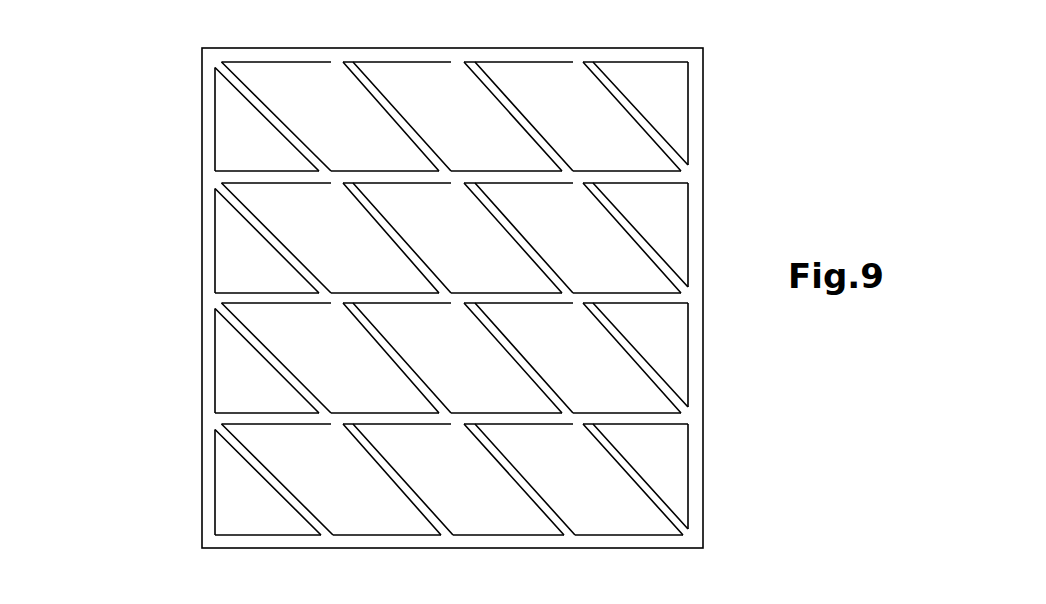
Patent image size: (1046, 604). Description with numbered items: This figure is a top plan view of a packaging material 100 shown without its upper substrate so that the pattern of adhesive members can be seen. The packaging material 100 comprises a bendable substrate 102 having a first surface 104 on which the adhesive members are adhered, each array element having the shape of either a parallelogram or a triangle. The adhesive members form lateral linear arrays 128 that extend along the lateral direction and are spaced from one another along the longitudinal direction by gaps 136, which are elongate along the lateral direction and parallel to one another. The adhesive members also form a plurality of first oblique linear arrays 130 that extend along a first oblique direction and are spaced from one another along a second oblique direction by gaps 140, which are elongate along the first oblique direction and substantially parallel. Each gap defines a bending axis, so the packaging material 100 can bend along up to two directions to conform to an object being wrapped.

The packaging material 100 is at (158, 70).
The bendable substrate 102 is at (697, 90).
The first surface 104 is at (694, 127).
The lateral linear arrays 128 is at (196, 115).
The gaps 136 is at (209, 177).
The first oblique linear arrays 130 is at (710, 243).
The gaps 140 is at (692, 178).